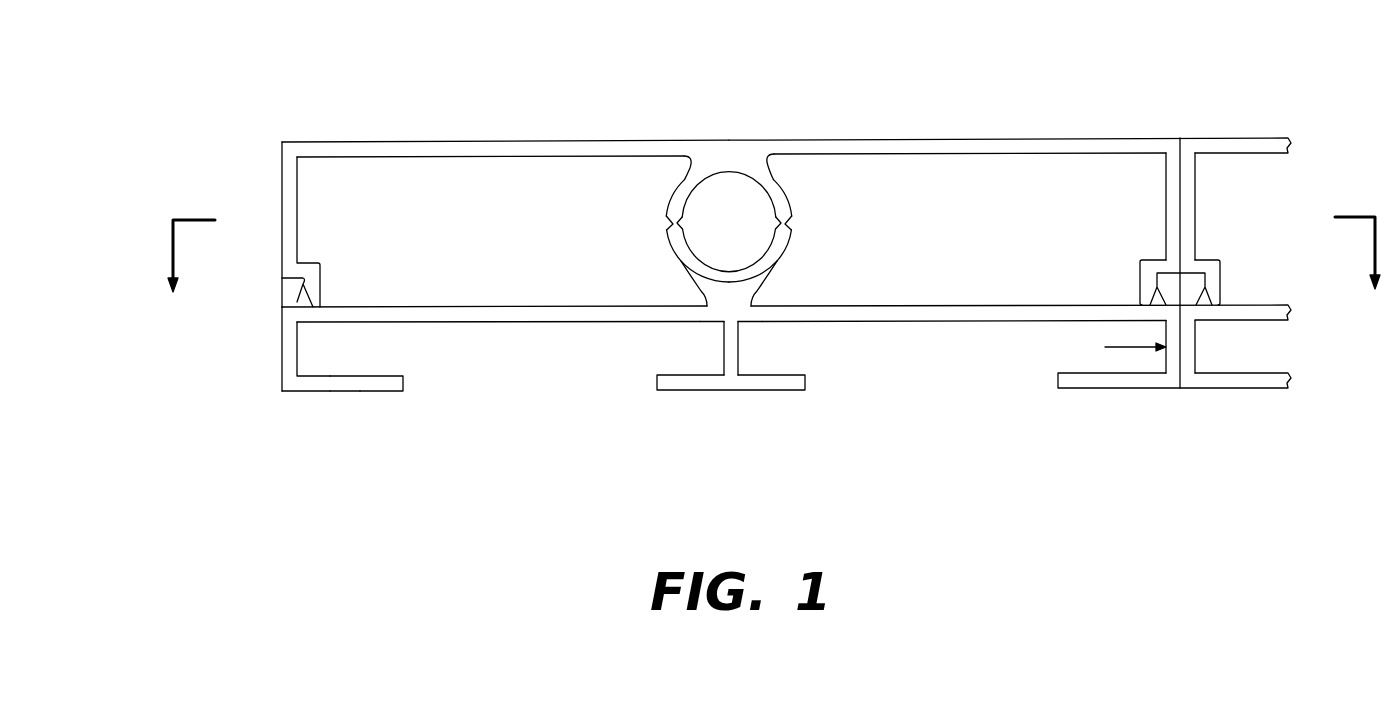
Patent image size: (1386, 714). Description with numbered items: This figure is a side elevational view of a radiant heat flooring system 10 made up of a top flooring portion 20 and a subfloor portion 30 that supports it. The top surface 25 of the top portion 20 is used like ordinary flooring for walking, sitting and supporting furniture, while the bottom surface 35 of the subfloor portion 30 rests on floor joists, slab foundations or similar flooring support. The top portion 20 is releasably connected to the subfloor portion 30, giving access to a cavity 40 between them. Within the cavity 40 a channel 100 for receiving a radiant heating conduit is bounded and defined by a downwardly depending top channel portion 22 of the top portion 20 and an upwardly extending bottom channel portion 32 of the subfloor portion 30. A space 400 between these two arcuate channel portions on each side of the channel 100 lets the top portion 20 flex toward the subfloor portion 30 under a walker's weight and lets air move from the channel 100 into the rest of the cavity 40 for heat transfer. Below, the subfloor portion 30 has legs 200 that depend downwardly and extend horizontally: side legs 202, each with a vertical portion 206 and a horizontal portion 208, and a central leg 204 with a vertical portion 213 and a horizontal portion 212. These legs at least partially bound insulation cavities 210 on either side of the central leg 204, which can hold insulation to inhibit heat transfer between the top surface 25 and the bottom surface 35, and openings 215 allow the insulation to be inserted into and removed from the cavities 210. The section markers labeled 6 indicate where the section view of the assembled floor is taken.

The flooring system 10 is at (131, 106).
The section line 6- 6 is at (774, 270).
The top flooring portion 20 is at (508, 141).
The top surface 25 is at (935, 138).
The cavity 40 is at (451, 223).
The subfloor portion 30 is at (507, 305).
The channel 100 is at (760, 237).
The top channel portion 22 is at (797, 204).
The bottom channel portion 32 is at (667, 237).
The space 400 is at (669, 222).
The legs 200 is at (282, 352).
The side legs 202 is at (282, 373).
The vertical portions 206 is at (297, 364).
The bottom surface 35 is at (323, 392).
The horizontal portions 208 is at (343, 392).
The openings 215 is at (521, 392).
The vertical portion 213 is at (724, 364).
The horizontal portion 212 is at (717, 392).
The central leg 204 is at (745, 392).
The insulation slot or cavity 210 is at (962, 363).